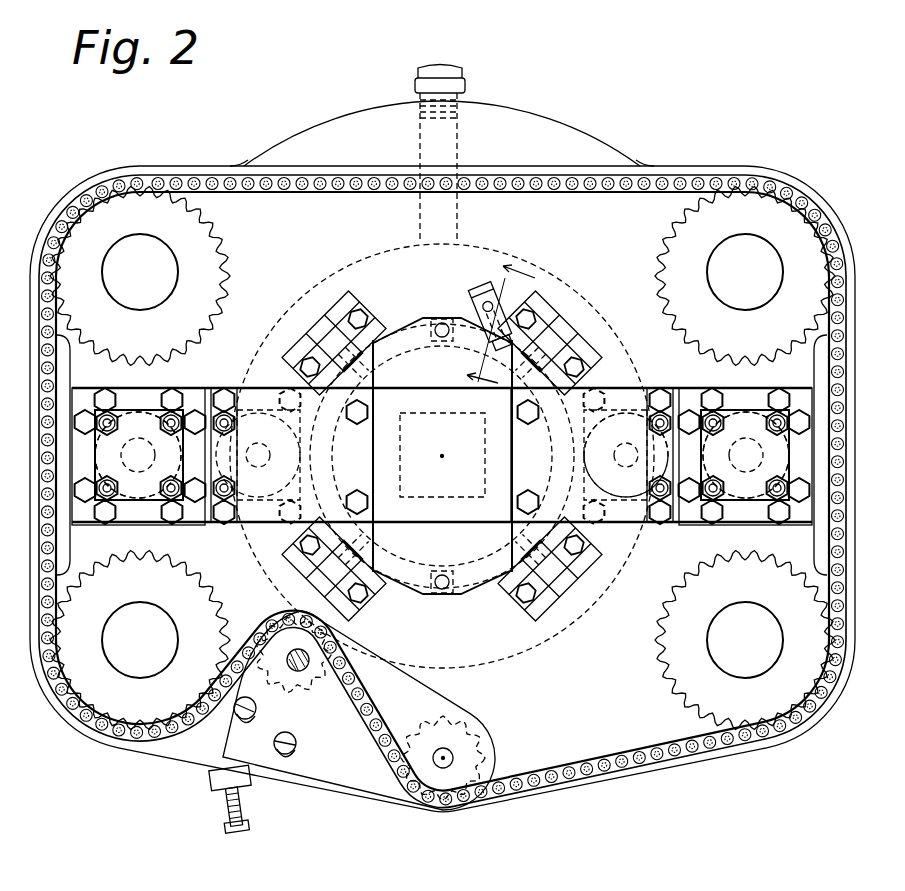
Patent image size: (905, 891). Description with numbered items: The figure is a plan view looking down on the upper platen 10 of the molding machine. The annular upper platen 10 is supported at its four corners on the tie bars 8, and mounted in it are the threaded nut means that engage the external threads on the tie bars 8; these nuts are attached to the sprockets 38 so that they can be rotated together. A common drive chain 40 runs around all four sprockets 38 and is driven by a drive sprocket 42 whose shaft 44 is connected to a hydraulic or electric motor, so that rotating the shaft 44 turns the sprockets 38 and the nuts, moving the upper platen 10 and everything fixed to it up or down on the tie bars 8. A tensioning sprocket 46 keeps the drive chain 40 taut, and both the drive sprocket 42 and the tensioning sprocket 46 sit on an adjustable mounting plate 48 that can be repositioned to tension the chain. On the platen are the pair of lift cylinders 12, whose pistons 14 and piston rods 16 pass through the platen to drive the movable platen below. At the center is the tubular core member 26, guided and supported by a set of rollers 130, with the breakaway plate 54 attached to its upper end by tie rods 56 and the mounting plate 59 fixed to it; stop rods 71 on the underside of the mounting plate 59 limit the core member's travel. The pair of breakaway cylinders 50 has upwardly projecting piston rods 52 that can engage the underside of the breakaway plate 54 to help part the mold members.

The tie bars 8 is at (122, 262).
The upper platen 10 is at (602, 236).
The lift cylinders 12 is at (98, 438).
The pistons 14 is at (108, 460).
The piston rods 16 is at (142, 478).
The central core member 26 is at (375, 528).
The sprockets 38 is at (60, 560).
The drive chain 40 is at (553, 176).
The drive sprocket 42 is at (293, 746).
The shaft 44 is at (304, 672).
The tensioning sprocket 46 is at (472, 732).
The adjustable mounting plate 48 is at (432, 698).
The breakaway cylinders 50 is at (258, 410).
The piston rods 52 is at (628, 462).
The breakaway plate 54 is at (486, 514).
The tie rods 56 is at (357, 424).
The mounting plate 59 is at (415, 575).
The stop rods 71 is at (433, 323).
The rollers 130 is at (330, 330).